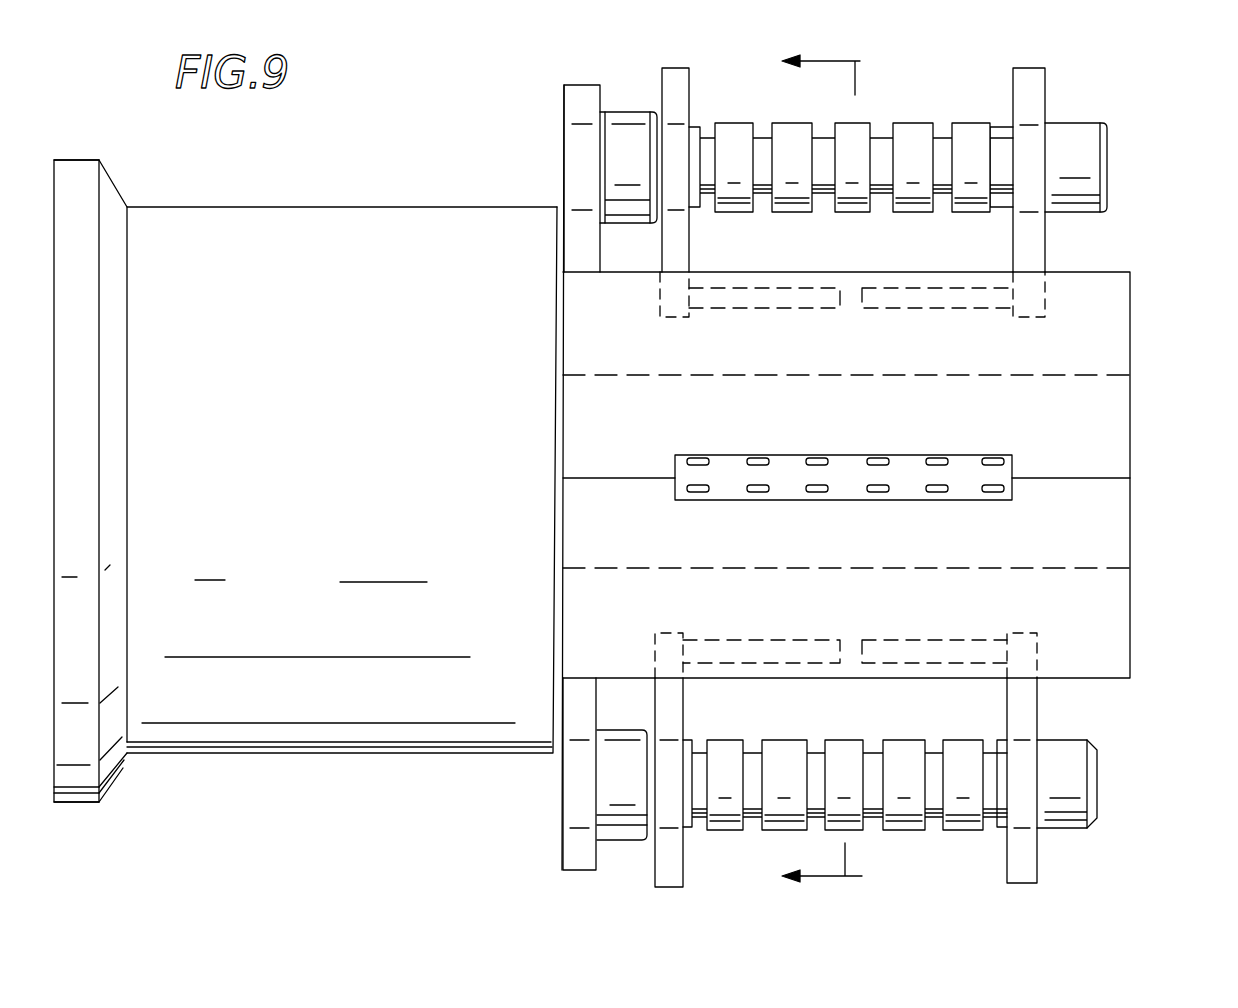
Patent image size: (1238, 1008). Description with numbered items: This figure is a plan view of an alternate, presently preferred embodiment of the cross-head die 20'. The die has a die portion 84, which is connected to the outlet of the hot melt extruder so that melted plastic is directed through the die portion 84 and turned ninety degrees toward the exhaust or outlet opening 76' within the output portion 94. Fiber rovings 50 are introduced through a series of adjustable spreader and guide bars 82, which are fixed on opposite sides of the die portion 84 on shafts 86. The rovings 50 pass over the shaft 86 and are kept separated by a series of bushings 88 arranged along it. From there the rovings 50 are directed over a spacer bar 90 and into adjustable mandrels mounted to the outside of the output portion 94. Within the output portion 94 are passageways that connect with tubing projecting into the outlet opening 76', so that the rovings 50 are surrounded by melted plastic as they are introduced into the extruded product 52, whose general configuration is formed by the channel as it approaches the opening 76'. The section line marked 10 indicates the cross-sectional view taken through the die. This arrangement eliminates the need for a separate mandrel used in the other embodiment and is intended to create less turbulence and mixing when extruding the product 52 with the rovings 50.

The cross-head die 20' is at (275, 453).
The die portion 84 is at (296, 207).
The output portion 94 is at (1120, 428).
The spacer bar 90 is at (982, 298).
The adjustable spreader and guide bars 82 is at (1030, 232).
The shaft 86 is at (943, 137).
The bushings 88 is at (900, 133).
The outlet opening 76' is at (813, 503).
The product 52 is at (853, 457).
The fiber rovings 50 is at (753, 458).
The section line 10 is at (803, 469).